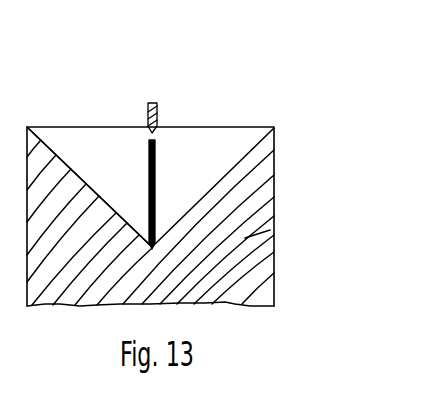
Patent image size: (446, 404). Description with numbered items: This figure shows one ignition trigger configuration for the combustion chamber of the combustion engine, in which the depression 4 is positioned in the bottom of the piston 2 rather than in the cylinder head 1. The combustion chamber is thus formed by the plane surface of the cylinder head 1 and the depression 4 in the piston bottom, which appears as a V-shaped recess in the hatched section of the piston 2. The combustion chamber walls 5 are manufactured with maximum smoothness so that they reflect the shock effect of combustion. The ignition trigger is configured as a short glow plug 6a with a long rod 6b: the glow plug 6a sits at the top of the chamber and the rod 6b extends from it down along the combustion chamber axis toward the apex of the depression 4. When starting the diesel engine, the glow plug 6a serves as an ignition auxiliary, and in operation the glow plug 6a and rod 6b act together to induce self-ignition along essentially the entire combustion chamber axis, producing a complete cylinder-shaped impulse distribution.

The cylinder head 1 is at (243, 126).
The piston 2 is at (274, 216).
The depression 4 is at (197, 177).
The combustion chamber walls 5 is at (72, 165).
The glow plug 6a is at (157, 117).
The rod 6b is at (147, 183).